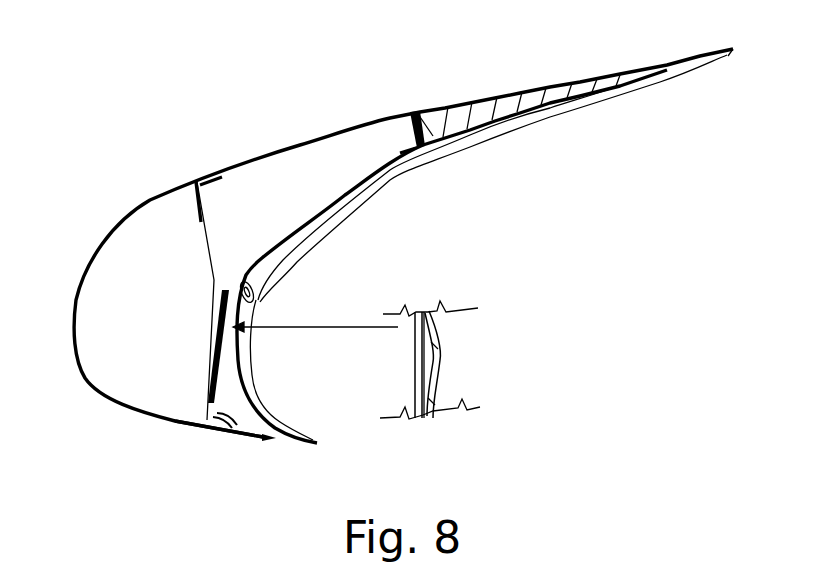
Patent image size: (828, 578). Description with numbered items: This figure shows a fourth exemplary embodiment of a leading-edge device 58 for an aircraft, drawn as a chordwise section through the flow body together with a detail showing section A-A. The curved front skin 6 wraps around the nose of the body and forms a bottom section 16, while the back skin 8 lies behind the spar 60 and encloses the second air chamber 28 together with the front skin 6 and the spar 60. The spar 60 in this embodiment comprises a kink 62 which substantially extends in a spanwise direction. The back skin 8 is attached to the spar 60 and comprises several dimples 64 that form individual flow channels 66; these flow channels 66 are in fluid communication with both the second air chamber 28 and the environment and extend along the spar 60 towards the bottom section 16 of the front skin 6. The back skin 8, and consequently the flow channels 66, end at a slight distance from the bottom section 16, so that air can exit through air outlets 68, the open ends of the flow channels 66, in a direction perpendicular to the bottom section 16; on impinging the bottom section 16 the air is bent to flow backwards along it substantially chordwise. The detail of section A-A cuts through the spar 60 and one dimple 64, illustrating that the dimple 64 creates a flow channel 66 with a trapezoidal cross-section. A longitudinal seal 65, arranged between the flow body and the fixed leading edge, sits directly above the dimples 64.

The front skin 6 is at (167, 185).
The back skin 8 is at (372, 180).
The bottom section 16 is at (205, 428).
The second air chamber 28 is at (350, 145).
The leading-edge device 58 is at (237, 108).
The spar 60 is at (210, 252).
The kink 62 is at (210, 333).
The dimple 64 is at (253, 337).
The longitudinal seal 65 is at (256, 288).
The flow channel 66 is at (437, 347).
The air outlet 68 is at (212, 432).